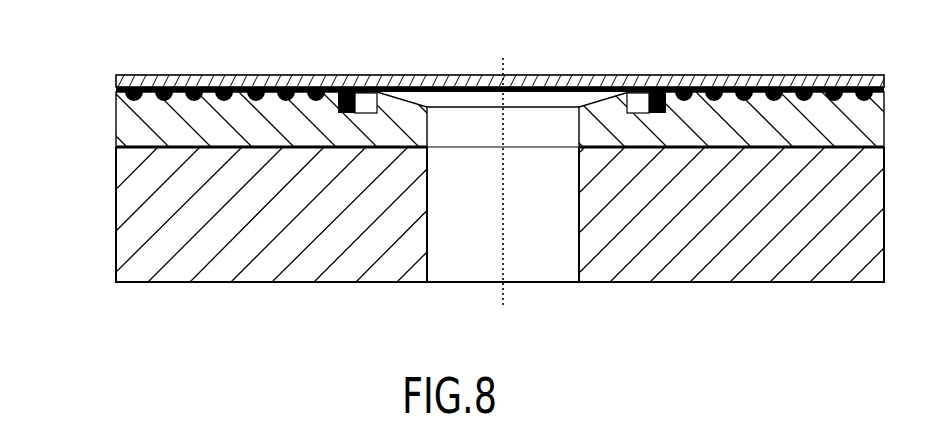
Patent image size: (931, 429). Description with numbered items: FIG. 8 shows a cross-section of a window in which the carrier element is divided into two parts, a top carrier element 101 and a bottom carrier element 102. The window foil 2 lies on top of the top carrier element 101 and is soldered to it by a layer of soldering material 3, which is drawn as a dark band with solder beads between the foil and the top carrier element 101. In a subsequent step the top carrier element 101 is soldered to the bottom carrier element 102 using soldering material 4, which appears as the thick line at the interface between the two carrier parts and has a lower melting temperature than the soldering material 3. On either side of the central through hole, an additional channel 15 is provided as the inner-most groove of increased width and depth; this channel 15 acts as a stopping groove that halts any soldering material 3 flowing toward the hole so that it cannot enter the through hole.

The window foil 2 is at (117, 82).
The soldering material 3 is at (117, 92).
The top carrier element 101 is at (143, 115).
The soldering material 4 is at (117, 148).
The bottom carrier element 102 is at (140, 204).
The additional channel 15 is at (365, 100).